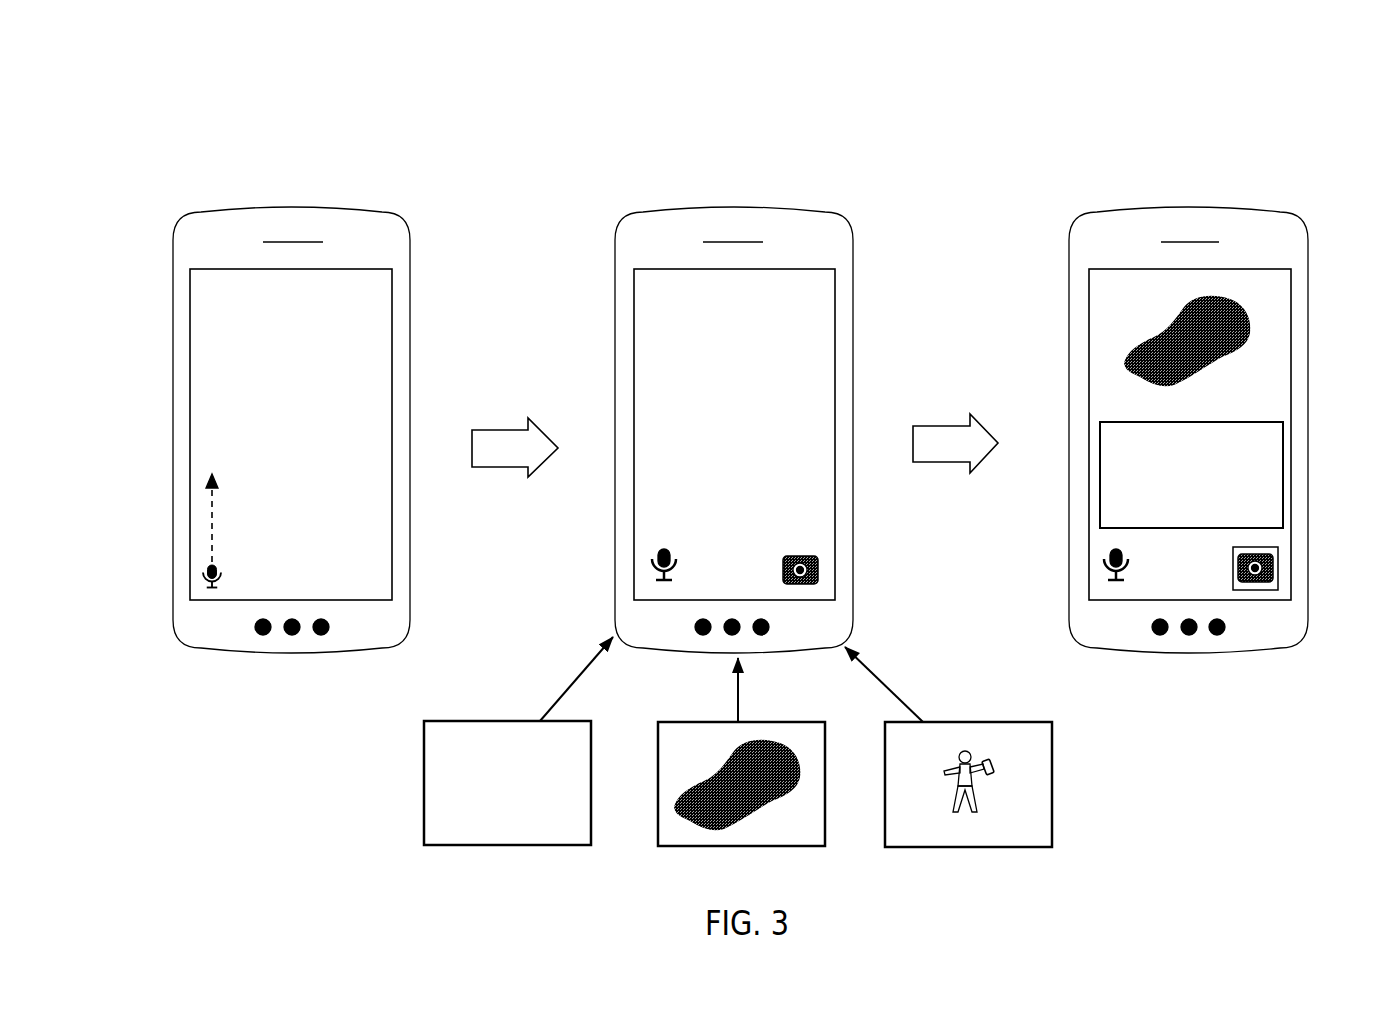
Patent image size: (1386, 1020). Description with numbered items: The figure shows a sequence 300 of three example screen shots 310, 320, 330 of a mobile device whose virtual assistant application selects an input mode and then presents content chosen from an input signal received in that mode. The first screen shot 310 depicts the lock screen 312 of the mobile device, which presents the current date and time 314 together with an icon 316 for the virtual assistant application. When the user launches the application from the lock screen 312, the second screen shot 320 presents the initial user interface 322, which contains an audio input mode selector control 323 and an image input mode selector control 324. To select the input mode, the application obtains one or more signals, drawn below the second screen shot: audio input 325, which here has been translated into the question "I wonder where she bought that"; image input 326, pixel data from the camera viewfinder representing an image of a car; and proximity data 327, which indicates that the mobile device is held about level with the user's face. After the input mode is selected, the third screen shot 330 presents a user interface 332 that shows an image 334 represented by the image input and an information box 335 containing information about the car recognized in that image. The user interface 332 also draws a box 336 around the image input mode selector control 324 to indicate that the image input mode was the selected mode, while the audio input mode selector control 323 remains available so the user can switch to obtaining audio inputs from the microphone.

The example user interaction flow 300 is at (152, 75).
The first screen shot 310 is at (170, 182).
The lock screen 312 is at (202, 320).
The current date and time 314 is at (231, 374).
The icon for a virtual assistant application 316 is at (195, 563).
The second screen shot 320 is at (627, 178).
The initial user interface 322 is at (645, 400).
The audio input mode selector control 323 is at (647, 557).
The image input mode selector control 324 is at (825, 555).
The audio input 325 is at (390, 797).
The image input 326 is at (797, 853).
The proximity data 327 is at (1070, 833).
The screen shot 330 is at (1098, 180).
The user interface 332 is at (1103, 298).
The image 334 is at (1110, 347).
The information box 335 is at (1097, 407).
The box 336 is at (1262, 592).